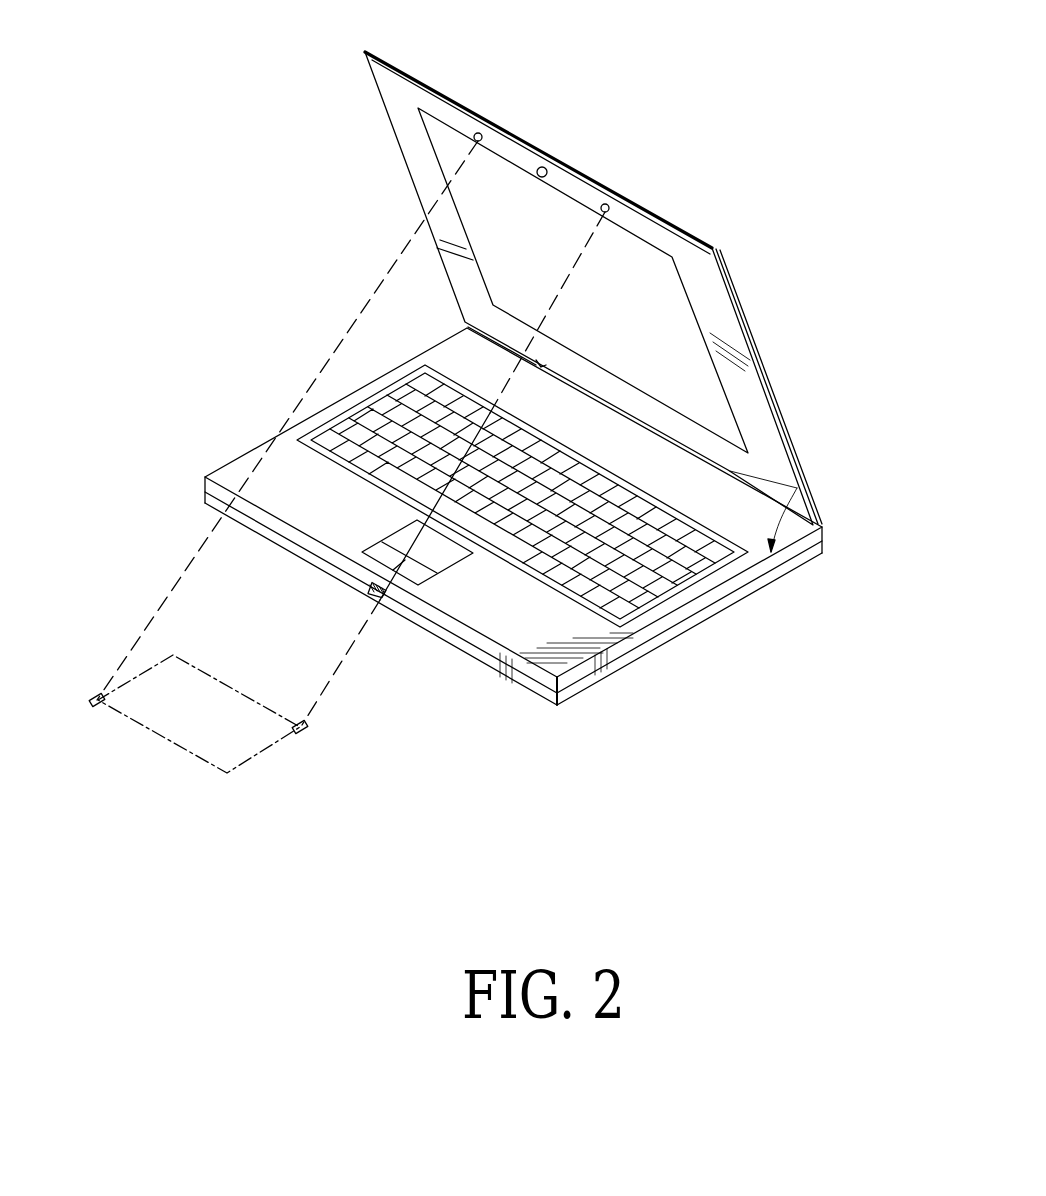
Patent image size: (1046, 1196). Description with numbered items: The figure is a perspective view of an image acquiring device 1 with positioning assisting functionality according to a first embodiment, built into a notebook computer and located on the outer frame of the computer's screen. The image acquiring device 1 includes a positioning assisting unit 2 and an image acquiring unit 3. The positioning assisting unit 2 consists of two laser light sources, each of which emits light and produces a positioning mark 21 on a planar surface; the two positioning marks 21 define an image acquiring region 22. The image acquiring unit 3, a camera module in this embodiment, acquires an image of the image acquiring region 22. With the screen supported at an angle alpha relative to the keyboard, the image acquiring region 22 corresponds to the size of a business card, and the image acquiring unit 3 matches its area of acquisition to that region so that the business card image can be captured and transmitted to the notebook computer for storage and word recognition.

The image acquiring device 1 is at (792, 266).
The positioning assisting unit 2 is at (479, 135).
The image acquiring unit 3 is at (545, 165).
The positioning marks 21 is at (93, 703).
The image acquiring region 22 is at (240, 745).